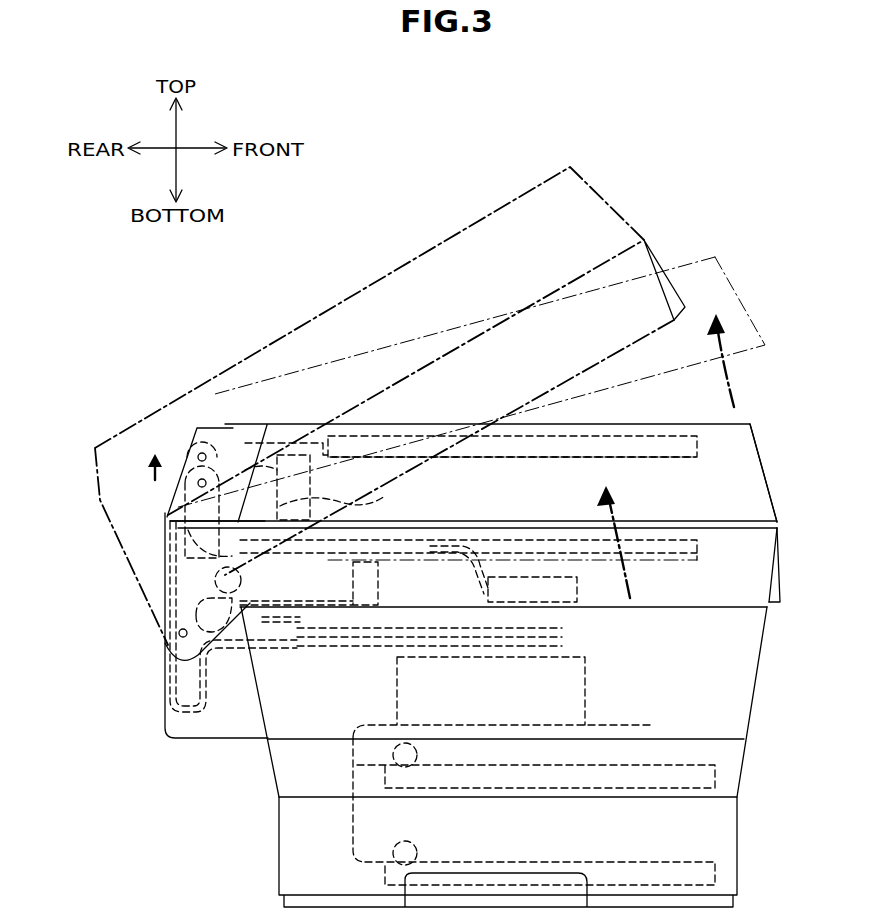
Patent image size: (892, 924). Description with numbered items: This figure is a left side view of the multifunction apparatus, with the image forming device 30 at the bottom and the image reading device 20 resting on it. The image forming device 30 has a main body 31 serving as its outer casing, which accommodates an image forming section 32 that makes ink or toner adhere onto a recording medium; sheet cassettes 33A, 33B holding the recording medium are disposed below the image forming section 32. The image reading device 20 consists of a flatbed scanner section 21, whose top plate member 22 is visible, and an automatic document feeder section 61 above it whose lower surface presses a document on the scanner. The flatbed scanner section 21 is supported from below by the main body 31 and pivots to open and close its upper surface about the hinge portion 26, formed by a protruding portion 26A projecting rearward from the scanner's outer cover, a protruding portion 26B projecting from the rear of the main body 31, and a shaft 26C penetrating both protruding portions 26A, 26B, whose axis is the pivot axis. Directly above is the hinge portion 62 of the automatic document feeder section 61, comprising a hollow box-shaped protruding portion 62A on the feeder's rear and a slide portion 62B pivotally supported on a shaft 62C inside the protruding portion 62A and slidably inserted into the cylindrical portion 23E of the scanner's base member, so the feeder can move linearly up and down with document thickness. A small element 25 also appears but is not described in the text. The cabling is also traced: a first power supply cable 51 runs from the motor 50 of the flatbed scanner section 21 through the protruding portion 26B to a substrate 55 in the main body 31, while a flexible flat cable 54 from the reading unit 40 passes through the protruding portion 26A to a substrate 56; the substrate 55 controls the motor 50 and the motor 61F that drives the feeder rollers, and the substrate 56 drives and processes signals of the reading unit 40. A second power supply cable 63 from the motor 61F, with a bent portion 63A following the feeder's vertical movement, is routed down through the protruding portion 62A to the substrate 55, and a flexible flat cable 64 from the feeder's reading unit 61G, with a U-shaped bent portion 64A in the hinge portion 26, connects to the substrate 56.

The image reading device 20 is at (777, 466).
The flatbed scanner section 21 is at (755, 556).
The top plate member 22 is at (778, 527).
The cylindrical portion 23E is at (167, 558).
The projection 25 is at (782, 583).
The hinge portion 26 is at (152, 620).
The protruding portion 26A is at (160, 605).
The protruding portion 26B is at (173, 717).
The shaft 26C is at (178, 635).
The image forming device 30 is at (771, 656).
The main body 31 is at (742, 697).
The image forming section 32 is at (585, 692).
The sheet cassette 33A is at (698, 873).
The sheet cassette 33B is at (703, 770).
The reading unit 40 is at (655, 560).
The motor 50 is at (574, 592).
The first power supply cable 51 is at (467, 570).
The flexible flat cable 54 is at (276, 602).
The substrate 55 is at (562, 628).
The substrate 56 is at (562, 645).
The automatic document feeder section 61 is at (455, 232).
The motor 61F is at (311, 479).
The reading unit 61G is at (624, 453).
The hinge portion 62 is at (184, 432).
The protruding portion 62A is at (205, 433).
The slide portion 62B is at (166, 520).
The shaft 62C is at (173, 487).
The second power supply cable 63 is at (380, 497).
The bent portion 63A is at (187, 578).
The flexible flat cable 64 is at (298, 432).
The bent portion 64A is at (187, 717).